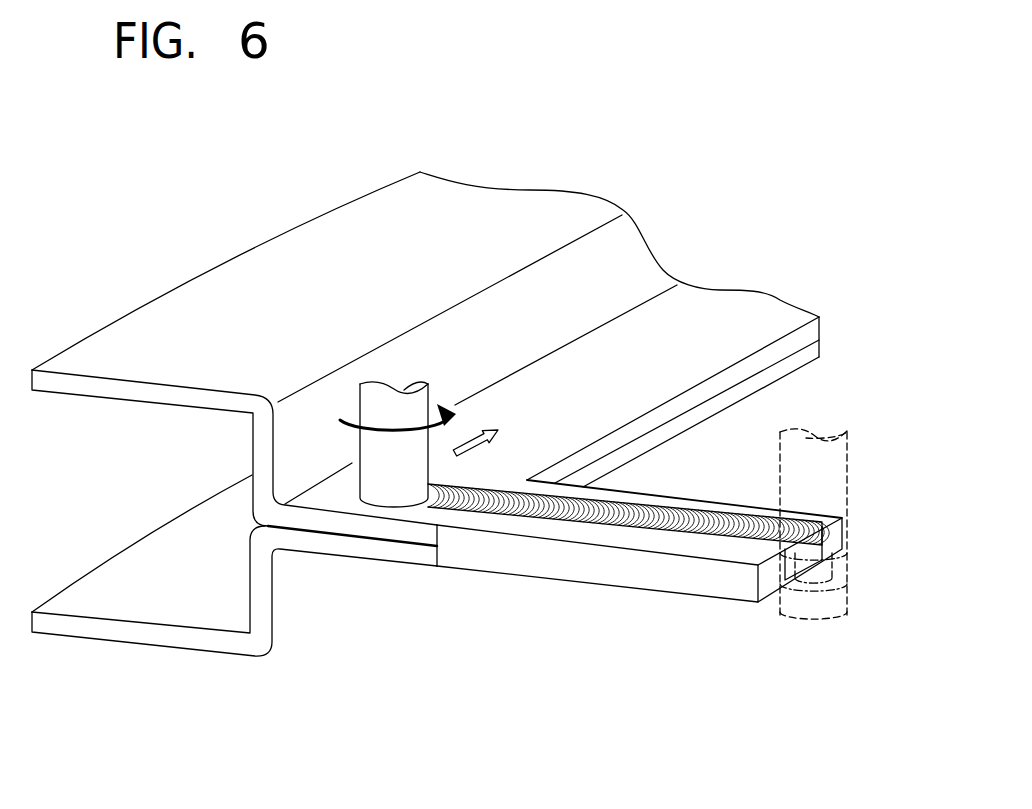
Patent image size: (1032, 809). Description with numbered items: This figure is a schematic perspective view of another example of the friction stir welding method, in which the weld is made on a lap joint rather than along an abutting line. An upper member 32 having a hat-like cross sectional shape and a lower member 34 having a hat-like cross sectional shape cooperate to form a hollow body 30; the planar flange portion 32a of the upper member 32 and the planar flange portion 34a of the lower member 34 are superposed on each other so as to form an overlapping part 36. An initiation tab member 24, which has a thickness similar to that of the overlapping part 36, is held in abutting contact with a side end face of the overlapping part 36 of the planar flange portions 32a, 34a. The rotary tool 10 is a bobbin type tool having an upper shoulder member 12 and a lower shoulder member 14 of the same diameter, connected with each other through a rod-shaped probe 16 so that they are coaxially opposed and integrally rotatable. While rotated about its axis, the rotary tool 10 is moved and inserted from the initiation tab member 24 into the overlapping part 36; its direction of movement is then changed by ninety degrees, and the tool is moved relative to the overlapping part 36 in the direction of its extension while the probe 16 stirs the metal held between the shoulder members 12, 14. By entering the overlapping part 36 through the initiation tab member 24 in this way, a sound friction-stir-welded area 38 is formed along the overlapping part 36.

The rotary tool 10 is at (440, 380).
The upper shoulder member 12 is at (416, 458).
The lower shoulder member 14 is at (812, 612).
The probe 16 is at (822, 577).
The initiation tab member 24 is at (632, 603).
The hollow body 30 is at (292, 186).
The upper member 32 is at (181, 318).
The planar flange portion 32a is at (328, 527).
The lower member 34 is at (156, 636).
The planar flange portion 34a is at (388, 550).
The overlapping part 36 is at (350, 568).
The friction-stir-welded area 38 is at (484, 488).